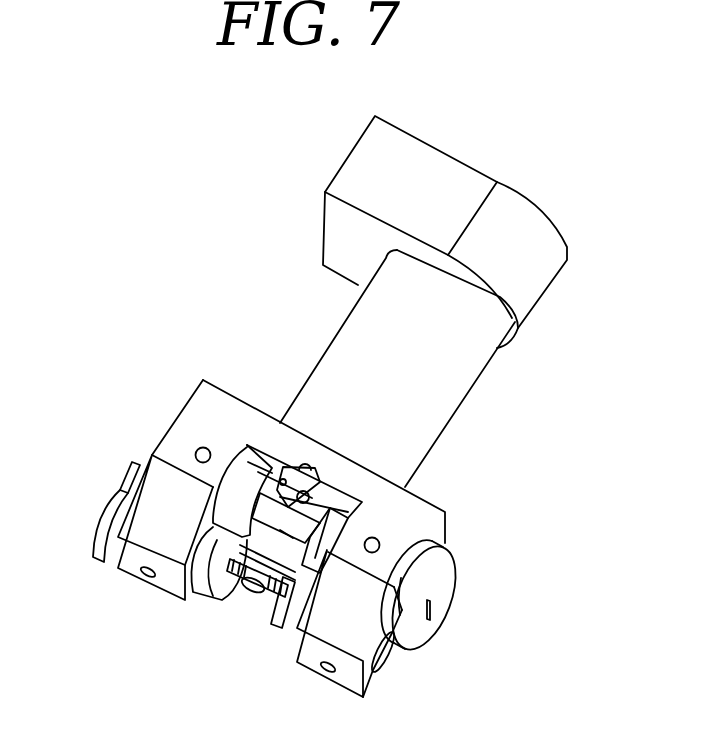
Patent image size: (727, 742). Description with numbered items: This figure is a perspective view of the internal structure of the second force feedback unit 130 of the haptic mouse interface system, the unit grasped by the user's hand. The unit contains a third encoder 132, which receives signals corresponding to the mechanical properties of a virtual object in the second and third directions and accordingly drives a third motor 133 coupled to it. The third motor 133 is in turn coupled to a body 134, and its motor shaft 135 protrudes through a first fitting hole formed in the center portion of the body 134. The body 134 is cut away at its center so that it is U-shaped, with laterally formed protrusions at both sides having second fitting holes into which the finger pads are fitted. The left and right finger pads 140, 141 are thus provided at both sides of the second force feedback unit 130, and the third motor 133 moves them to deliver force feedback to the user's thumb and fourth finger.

The second force feedback unit 130 is at (278, 320).
The third encoder 132 is at (357, 173).
The third motor 133 is at (458, 395).
The body 134 is at (172, 424).
The motor shaft 135 is at (253, 595).
The left finger pad 140 is at (442, 580).
The right finger pad 141 is at (92, 565).